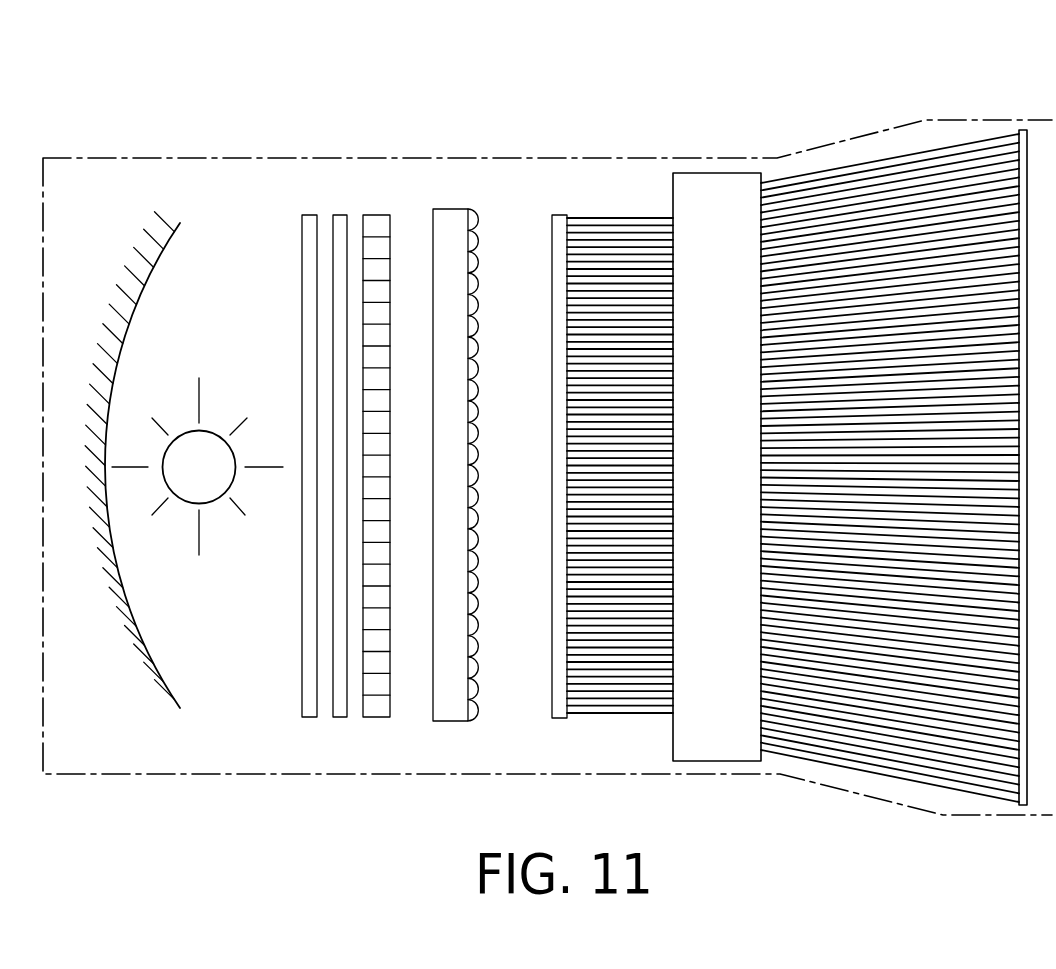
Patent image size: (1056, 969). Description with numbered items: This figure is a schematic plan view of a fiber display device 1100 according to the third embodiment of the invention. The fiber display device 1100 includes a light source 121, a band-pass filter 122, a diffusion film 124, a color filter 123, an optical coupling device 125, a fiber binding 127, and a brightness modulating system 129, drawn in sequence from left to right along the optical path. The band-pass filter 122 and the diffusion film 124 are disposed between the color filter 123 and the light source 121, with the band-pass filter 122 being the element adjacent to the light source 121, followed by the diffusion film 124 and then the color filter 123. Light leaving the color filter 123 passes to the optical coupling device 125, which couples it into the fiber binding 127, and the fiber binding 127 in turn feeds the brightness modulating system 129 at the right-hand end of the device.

The fiber display device 1100 is at (496, 60).
The light source 121 is at (202, 473).
The band-pass filter 122 is at (310, 233).
The diffusion film 124 is at (338, 225).
The color filter 123 is at (375, 223).
The optical coupling device 125 is at (450, 220).
The fiber binding 127 is at (602, 216).
The brightness modulating system 129 is at (708, 185).